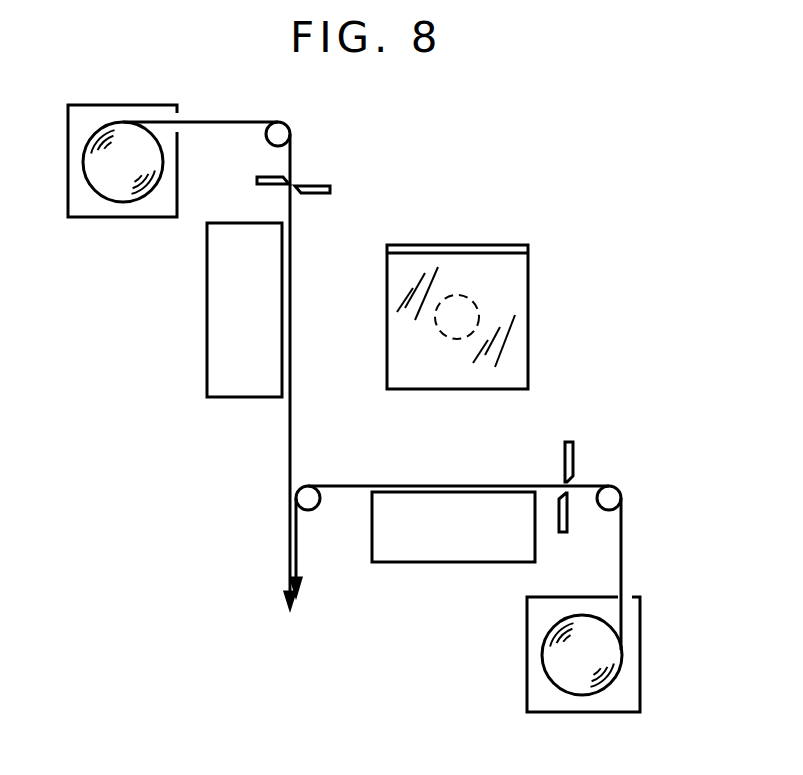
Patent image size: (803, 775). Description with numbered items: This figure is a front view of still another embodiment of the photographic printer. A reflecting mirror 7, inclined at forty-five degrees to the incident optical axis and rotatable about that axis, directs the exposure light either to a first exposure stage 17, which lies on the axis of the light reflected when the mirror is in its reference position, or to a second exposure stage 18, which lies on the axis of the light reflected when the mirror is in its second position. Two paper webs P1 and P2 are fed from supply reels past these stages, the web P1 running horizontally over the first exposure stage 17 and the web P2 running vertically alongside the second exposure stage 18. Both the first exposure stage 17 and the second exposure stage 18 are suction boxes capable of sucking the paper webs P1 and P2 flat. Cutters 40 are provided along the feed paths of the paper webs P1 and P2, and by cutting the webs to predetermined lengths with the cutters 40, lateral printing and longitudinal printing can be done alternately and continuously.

The reflecting mirror 7 is at (515, 302).
The first exposure stage 17 is at (427, 555).
The second exposure stage 18 is at (212, 320).
The cutters 40 is at (312, 183).
The paper web P1 is at (452, 485).
The paper web P2 is at (288, 445).